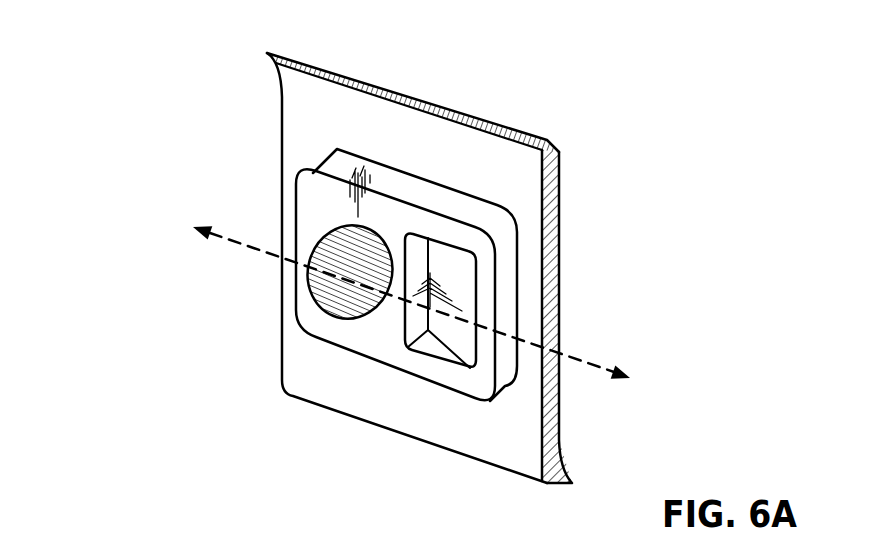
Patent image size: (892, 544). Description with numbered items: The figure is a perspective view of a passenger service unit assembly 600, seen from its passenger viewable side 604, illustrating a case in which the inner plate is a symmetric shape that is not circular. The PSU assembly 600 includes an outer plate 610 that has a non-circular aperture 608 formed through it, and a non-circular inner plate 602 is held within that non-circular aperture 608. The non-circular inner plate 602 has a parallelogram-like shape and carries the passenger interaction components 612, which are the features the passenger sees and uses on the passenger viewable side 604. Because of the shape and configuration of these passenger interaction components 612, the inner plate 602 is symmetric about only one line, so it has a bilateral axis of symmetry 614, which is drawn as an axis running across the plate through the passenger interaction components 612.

The PSU assembly 600 is at (228, 55).
The non-circular inner plate 602 is at (375, 217).
The passenger viewable side 604 is at (283, 430).
The non-circular aperture 608 is at (520, 203).
The outer plate 610 is at (558, 292).
The passenger interaction components 612 is at (417, 325).
The bilateral axis of symmetry 614 is at (572, 357).